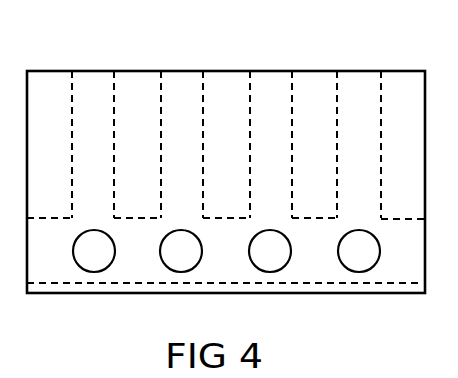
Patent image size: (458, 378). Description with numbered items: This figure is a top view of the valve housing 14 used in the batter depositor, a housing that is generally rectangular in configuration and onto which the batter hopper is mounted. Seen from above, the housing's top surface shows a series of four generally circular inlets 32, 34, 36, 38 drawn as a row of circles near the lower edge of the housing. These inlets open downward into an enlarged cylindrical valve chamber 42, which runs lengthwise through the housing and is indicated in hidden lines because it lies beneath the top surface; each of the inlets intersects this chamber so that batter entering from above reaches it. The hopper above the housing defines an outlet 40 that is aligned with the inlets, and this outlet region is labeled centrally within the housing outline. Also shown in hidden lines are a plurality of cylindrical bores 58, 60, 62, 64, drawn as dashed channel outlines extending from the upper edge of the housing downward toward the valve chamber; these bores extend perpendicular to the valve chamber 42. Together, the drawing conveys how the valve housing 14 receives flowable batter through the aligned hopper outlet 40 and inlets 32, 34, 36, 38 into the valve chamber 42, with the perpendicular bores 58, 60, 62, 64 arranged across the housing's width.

The valve housing 14 is at (415, 64).
The inlet 32 is at (88, 261).
The inlet 34 is at (178, 262).
The inlet 36 is at (273, 259).
The inlet 38 is at (361, 261).
The outlet 40 is at (237, 163).
The valve chamber 42 is at (398, 237).
The cylindrical bore 58 is at (91, 93).
The cylindrical bore 60 is at (181, 86).
The cylindrical bore 62 is at (271, 88).
The cylindrical bore 64 is at (359, 90).